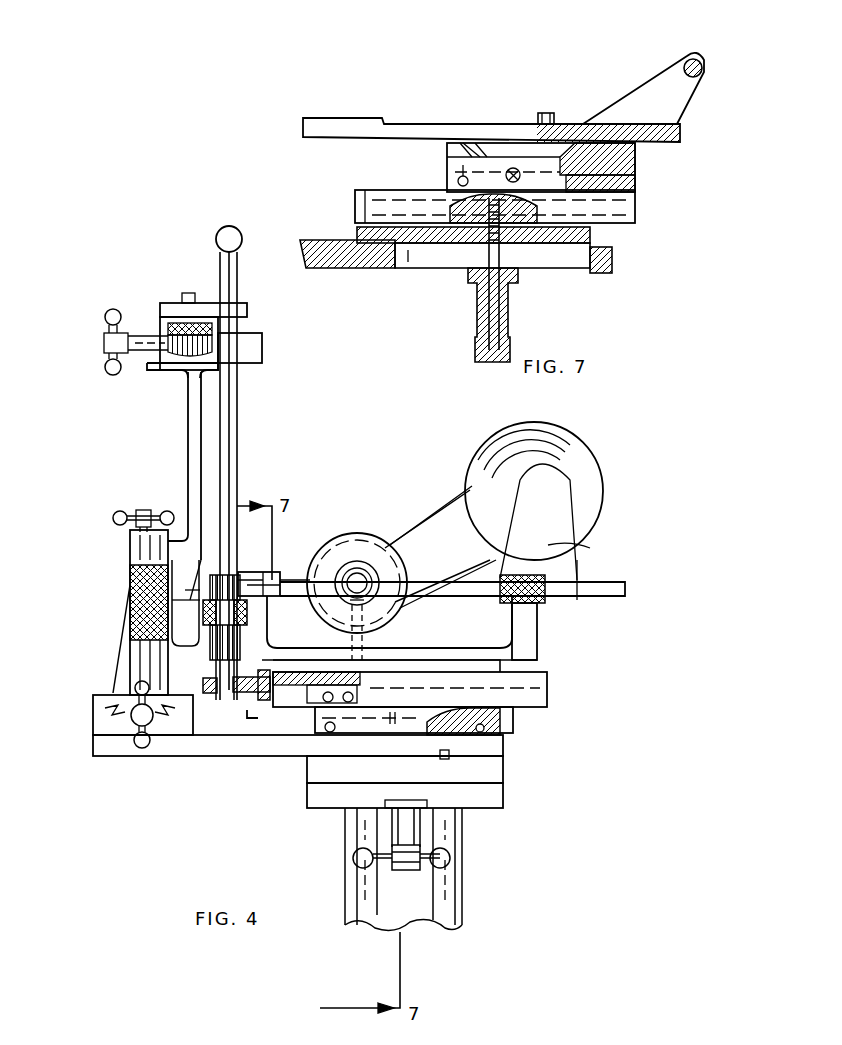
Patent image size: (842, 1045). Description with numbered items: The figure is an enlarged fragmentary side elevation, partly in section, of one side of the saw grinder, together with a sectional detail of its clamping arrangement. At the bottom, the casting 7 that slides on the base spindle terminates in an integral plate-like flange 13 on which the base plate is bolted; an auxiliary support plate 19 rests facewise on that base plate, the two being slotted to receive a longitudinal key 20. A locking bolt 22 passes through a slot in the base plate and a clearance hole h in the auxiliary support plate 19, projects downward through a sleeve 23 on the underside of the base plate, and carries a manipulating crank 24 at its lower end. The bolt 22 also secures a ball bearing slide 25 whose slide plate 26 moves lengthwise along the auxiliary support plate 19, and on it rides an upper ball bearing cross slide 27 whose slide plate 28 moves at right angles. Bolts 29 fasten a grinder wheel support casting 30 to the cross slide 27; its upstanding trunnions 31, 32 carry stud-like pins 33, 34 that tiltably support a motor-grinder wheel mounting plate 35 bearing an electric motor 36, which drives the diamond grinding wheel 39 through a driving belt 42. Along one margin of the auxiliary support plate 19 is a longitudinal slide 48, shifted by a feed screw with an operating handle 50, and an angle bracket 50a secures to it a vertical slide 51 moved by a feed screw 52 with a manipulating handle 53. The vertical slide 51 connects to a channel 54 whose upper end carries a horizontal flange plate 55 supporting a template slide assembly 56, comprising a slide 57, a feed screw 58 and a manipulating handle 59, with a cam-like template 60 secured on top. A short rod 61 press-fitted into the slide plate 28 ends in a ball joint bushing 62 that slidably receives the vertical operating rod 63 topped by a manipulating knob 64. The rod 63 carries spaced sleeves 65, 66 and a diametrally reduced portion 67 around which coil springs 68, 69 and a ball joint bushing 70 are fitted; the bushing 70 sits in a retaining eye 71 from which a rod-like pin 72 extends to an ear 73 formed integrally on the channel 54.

In FIG. 4, the casting 7 is at (462, 900).
In FIG. 4, the plate-like flange 13 is at (505, 806).
In FIG. 4, the auxiliary support plate 19 is at (238, 760).
In FIG. 4, the longitudinal key 20 is at (500, 777).
In FIG. 7, the bolt 22 is at (478, 262).
In FIG. 4, the sleeve 23 is at (420, 820).
In FIG. 4, the manipulating crank 24 is at (425, 862).
In FIG. 4, the ball bearing slide 25 is at (490, 738).
In FIG. 4, the slide plate 26 is at (500, 716).
In FIG. 7, the upper ball bearing cross slide 27 is at (632, 206).
In FIG. 4, the upper ball bearing cross slide 27 is at (513, 712).
In FIG. 7, the slide plate 28 is at (635, 166).
In FIG. 4, the slide plate 28 is at (547, 690).
In FIG. 7, the bolt 29 is at (548, 112).
In FIG. 4, the bolt 29 is at (365, 655).
In FIG. 4, the grinder wheel support casting 30 is at (490, 648).
In FIG. 4, the trunnion 31 is at (248, 612).
In FIG. 7, the trunnion 32 is at (694, 109).
In FIG. 4, the trunnion 32 is at (537, 627).
In FIG. 4, the stud-like pin 33 is at (250, 575).
In FIG. 7, the stud-like pin 34 is at (701, 70).
In FIG. 4, the stud-like pin 34 is at (545, 580).
In FIG. 4, the motor-grinder wheel mounting plate 35 is at (625, 590).
In FIG. 4, the electric motor 36 is at (598, 497).
In FIG. 4, the diamond grinding wheel 39 is at (380, 555).
In FIG. 4, the driving belt 42 is at (428, 505).
In FIG. 4, the longitudinal slide 48 is at (93, 712).
In FIG. 4, the operating handle 50 is at (148, 748).
In FIG. 4, the angle bracket 50a is at (120, 617).
In FIG. 4, the vertical slide 51 is at (130, 546).
In FIG. 4, the feed screw 52 is at (130, 578).
In FIG. 4, the manipulating handle 53 is at (113, 516).
In FIG. 4, the channel 54 is at (188, 462).
In FIG. 4, the horizontal flange plate 55 is at (150, 371).
In FIG. 4, the template slide assembly 56 is at (262, 356).
In FIG. 4, the slide 57 is at (250, 333).
In FIG. 4, the feed screw 58 is at (182, 360).
In FIG. 4, the manipulating handle 59 is at (105, 350).
In FIG. 4, the cam-like template 60 is at (175, 302).
In FIG. 4, the short rod 61 is at (248, 700).
In FIG. 4, the ball joint bushing 62 is at (210, 693).
In FIG. 4, the vertical operating rod 63 is at (238, 428).
In FIG. 4, the manipulating knob 64 is at (220, 230).
In FIG. 4, the sleeve 65 is at (253, 572).
In FIG. 4, the sleeve 66 is at (242, 648).
In FIG. 4, the diametrally reduced portion 67 is at (310, 560).
In FIG. 4, the coil spring 68 is at (236, 575).
In FIG. 4, the coil spring 69 is at (218, 665).
In FIG. 4, the ball joint bushing 70 is at (196, 645).
In FIG. 4, the retaining eye 71 is at (185, 612).
In FIG. 4, the rod-like pin 72 is at (190, 600).
In FIG. 4, the ear 73 is at (186, 636).
In FIG. 7, the clearance hole h is at (542, 247).